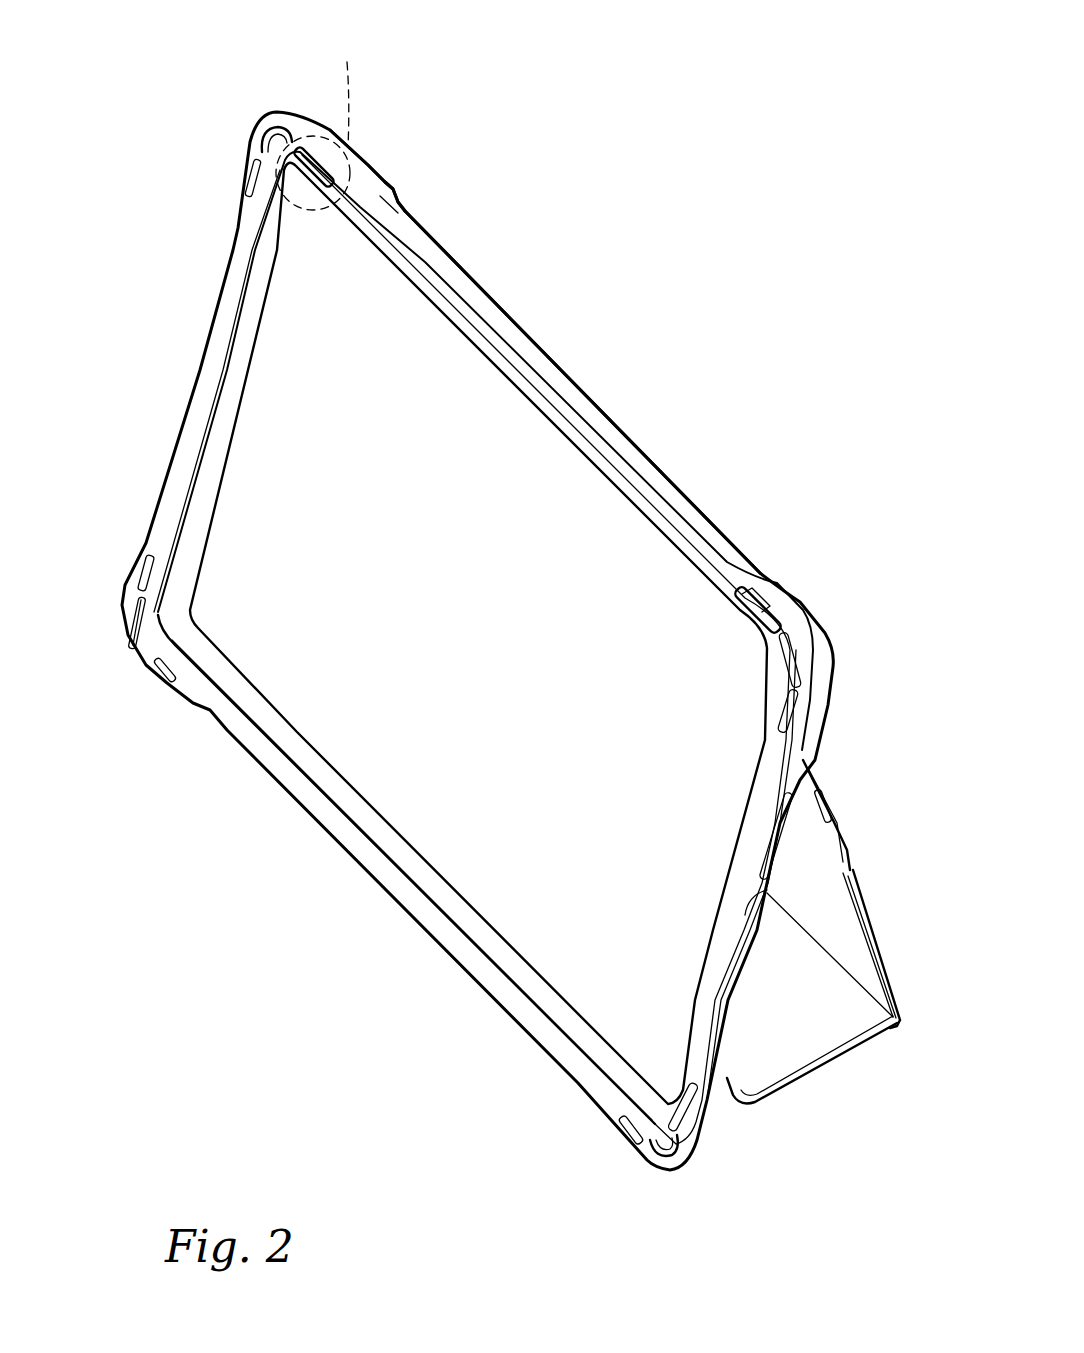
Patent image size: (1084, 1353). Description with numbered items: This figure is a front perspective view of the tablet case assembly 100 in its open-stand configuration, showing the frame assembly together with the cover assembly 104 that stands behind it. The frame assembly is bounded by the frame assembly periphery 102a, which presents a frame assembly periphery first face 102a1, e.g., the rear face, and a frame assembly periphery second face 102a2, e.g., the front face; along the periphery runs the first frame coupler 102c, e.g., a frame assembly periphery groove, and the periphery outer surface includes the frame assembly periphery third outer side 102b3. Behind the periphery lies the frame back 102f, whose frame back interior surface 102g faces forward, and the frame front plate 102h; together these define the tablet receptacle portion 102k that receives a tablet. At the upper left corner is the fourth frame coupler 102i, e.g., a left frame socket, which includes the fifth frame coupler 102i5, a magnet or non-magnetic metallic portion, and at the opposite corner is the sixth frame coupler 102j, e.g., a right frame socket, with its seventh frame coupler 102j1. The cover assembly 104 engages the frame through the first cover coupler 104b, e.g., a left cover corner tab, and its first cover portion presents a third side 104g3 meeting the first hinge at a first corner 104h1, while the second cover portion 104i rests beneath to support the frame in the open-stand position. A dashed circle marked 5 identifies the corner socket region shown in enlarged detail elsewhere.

The tablet case assembly 100 is at (652, 210).
The frame assembly periphery 102a is at (438, 262).
The frame assembly periphery first face 102a1 is at (363, 178).
The frame assembly periphery second face 102a2 is at (400, 213).
The first frame coupler 102c is at (547, 377).
The frame back 102f is at (606, 560).
The frame back interior surface 102g is at (330, 263).
The frame front plate 102h is at (545, 408).
The fourth frame coupler 102i is at (305, 122).
The fifth frame coupler 102i5 is at (330, 162).
The sixth frame coupler 102j is at (767, 612).
The seventh frame coupler 102j1 is at (745, 600).
The tablet receptacle portion 102k is at (300, 492).
The frame assembly periphery third outer side 102b3 is at (700, 1163).
The cover assembly 104 is at (908, 786).
The first cover coupler 104b is at (827, 765).
The third side 104g3 is at (873, 937).
The first corner 104h1 is at (900, 1022).
The second cover portion 104i is at (788, 1063).
The detail view circle 5 is at (324, 116).